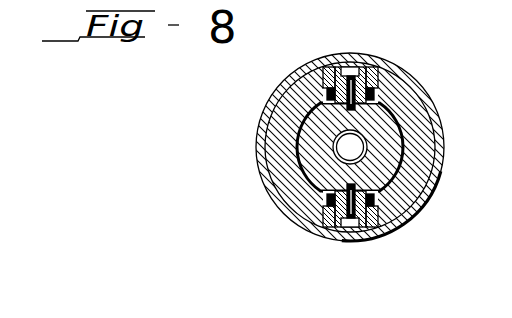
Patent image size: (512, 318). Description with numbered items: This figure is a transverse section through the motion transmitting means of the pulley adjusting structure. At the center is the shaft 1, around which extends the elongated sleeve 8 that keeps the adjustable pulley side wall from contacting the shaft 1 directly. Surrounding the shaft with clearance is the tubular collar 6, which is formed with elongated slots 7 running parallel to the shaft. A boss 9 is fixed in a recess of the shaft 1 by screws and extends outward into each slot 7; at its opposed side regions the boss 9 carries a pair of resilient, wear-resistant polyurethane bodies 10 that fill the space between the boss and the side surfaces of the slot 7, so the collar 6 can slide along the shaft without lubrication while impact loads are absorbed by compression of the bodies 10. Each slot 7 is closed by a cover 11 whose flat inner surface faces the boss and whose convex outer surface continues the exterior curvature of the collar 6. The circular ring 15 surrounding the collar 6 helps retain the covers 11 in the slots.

The shaft 1 is at (395, 150).
The tubular collar 6 is at (266, 119).
The elongated slot 7 is at (328, 90).
The elongated sleeve 8 is at (297, 140).
The boss 9 is at (376, 91).
The resilient bodies 10 is at (327, 70).
The cover 11 is at (352, 67).
The circular ring 15 is at (415, 212).